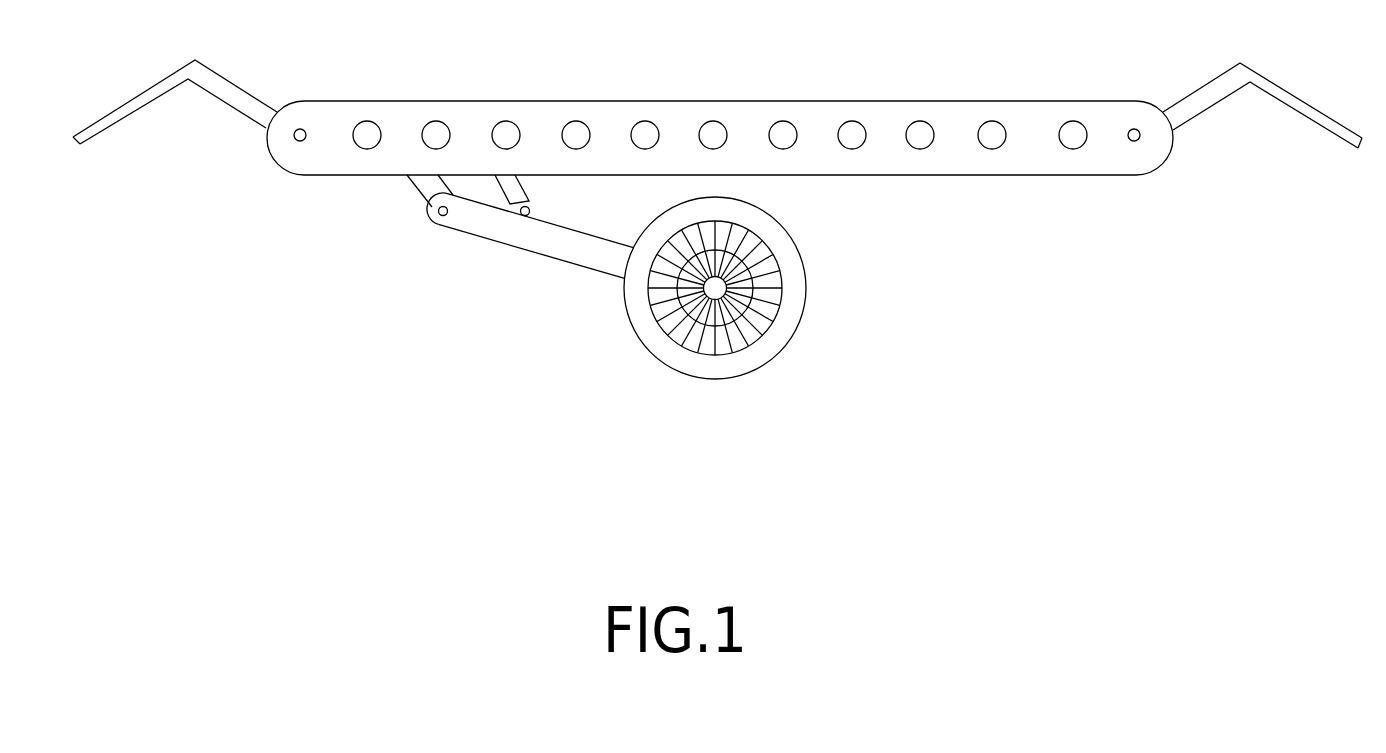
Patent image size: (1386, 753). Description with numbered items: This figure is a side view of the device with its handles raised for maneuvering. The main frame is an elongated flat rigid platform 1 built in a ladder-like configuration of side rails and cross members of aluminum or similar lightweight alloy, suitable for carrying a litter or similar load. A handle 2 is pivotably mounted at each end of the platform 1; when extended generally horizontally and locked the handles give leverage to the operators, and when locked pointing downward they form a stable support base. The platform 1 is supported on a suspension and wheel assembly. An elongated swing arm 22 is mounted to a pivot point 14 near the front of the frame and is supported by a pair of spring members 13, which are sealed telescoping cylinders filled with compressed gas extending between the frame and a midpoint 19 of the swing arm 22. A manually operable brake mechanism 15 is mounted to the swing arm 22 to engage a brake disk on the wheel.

The platform 1 is at (383, 114).
The handle 2 is at (113, 128).
The spring members 13 is at (493, 198).
The pivot point 14 is at (440, 211).
The brake mechanism 15 is at (680, 312).
The midpoint of the swing arm 19 is at (528, 228).
The swing arm 22 is at (592, 268).